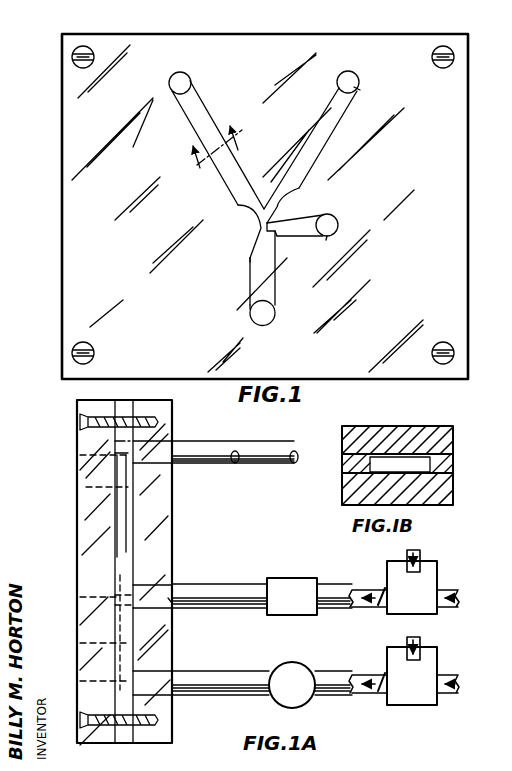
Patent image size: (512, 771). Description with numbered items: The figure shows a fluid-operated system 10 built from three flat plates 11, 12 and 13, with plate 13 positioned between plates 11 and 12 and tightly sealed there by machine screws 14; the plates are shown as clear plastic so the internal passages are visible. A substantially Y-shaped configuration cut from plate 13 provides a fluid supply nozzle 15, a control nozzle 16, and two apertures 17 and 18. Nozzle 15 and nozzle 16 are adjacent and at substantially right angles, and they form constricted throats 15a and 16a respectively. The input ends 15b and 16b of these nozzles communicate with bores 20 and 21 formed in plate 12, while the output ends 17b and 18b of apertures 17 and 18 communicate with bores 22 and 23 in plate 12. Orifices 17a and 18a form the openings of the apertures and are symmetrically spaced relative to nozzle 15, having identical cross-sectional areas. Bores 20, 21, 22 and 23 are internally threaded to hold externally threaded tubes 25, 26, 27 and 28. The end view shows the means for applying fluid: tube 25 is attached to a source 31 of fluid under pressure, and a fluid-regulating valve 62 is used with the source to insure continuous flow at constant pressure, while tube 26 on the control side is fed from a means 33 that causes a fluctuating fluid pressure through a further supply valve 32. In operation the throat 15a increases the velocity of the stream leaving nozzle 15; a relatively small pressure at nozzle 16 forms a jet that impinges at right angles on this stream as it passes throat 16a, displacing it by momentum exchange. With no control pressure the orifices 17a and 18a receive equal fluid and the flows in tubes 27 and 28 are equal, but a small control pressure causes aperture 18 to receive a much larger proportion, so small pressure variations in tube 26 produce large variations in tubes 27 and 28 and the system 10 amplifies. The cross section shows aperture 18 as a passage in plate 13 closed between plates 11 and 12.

In FIG. 1, the fluid-operated system 10 is at (58, 133).
In FIG. 1A, the fluid-operated system 10 is at (74, 512).
In FIG. 1, the plate 11 is at (72, 190).
In FIG. 1A, the plate 11 is at (80, 537).
In FIG. 1B, the plate 11 is at (420, 431).
In FIG. 1A, the plate 12 is at (168, 537).
In FIG. 1B, the plate 12 is at (442, 483).
In FIG. 1A, the plate 13 is at (122, 556).
In FIG. 1B, the plate 13 is at (348, 461).
In FIG. 1, the machine screws 14 is at (72, 58).
In FIG. 1A, the machine screws 14 is at (80, 425).
In FIG. 1, the fluid supply nozzle 15 is at (258, 278).
In FIG. 1A, the fluid supply nozzle 15 is at (88, 643).
In FIG. 1, the constricted throat 15a is at (258, 240).
In FIG. 1, the input end 15b is at (258, 317).
In FIG. 1A, the input end 15b is at (87, 681).
In FIG. 1, the control nozzle 16 is at (313, 222).
In FIG. 1A, the control nozzle 16 is at (129, 587).
In FIG. 1, the constricted throat 16a is at (272, 232).
In FIG. 1A, the constricted throat 16a is at (81, 599).
In FIG. 1, the input end 16b is at (338, 225).
In FIG. 1, the aperture 17 is at (324, 133).
In FIG. 1, the orifice 17a is at (297, 195).
In FIG. 1, the output end 17b is at (355, 86).
In FIG. 1, the aperture 18 is at (172, 88).
In FIG. 1A, the aperture 18 is at (87, 473).
In FIG. 1B, the aperture 18 is at (413, 463).
In FIG. 1, the orifice 18a is at (240, 206).
In FIG. 1A, the output end 18b is at (86, 456).
In FIG. 1, the bore 20 is at (266, 325).
In FIG. 1A, the bore 20 is at (160, 692).
In FIG. 1, the bore 21 is at (327, 237).
In FIG. 1A, the bore 21 is at (166, 606).
In FIG. 1, the bore 22 is at (347, 71).
In FIG. 1A, the bore 22 is at (150, 446).
In FIG. 1, the bore 23 is at (181, 72).
In FIG. 1A, the tube 25 is at (208, 680).
In FIG. 1A, the tube 26 is at (206, 593).
In FIG. 1A, the tube 27 is at (205, 463).
In FIG. 1A, the tube 28 is at (264, 463).
In FIG. 1A, the source of fluid under pressure 31 is at (404, 671).
In FIG. 1A, the valve 32 is at (404, 582).
In FIG. 1A, the means for causing fluctuating fluid pressure 33 is at (292, 596).
In FIG. 1A, the fluid-regulating valve 62 is at (293, 662).